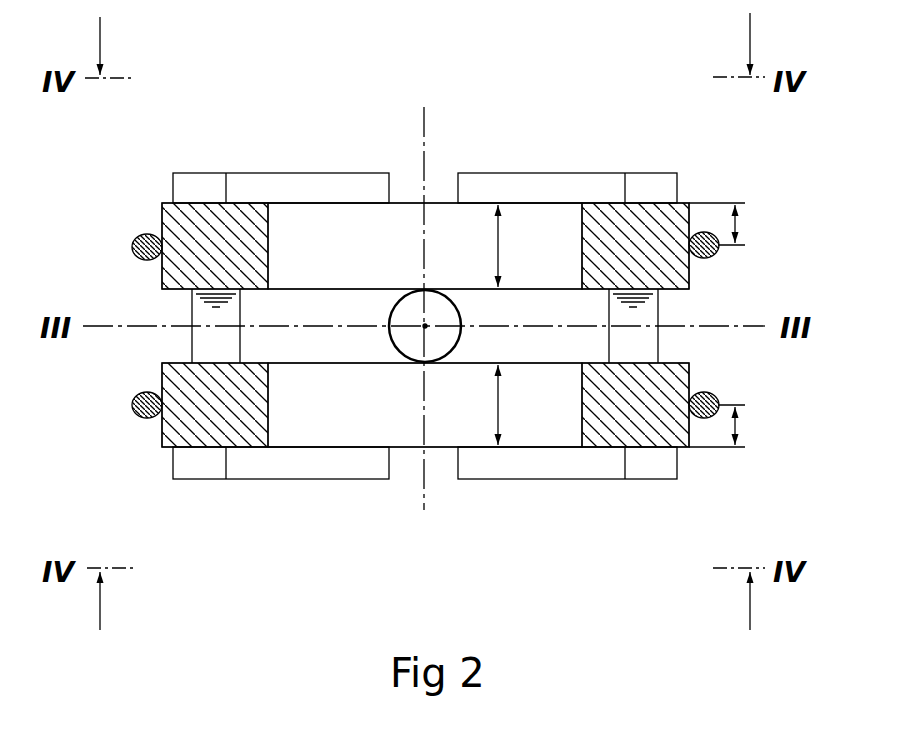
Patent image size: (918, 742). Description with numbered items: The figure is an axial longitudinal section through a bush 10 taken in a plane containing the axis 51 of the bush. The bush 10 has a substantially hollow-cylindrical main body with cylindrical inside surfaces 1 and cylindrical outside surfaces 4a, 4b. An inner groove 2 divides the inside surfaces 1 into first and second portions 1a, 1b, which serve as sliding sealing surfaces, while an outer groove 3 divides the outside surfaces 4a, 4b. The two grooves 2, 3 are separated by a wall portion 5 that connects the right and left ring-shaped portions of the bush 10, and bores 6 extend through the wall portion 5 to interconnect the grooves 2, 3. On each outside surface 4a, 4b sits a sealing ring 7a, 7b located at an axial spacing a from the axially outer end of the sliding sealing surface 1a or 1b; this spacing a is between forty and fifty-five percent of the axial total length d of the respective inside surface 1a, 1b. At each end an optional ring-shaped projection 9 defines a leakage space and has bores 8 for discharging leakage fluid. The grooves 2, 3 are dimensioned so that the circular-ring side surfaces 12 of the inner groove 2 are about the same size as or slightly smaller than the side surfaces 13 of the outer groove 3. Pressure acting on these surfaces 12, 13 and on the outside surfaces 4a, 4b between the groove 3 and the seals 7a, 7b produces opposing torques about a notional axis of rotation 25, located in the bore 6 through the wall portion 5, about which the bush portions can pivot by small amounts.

The cylindrical inside surfaces 1 is at (336, 254).
The first portion of the cylindrical inside surfaces 1a is at (272, 238).
The second portion of the cylindrical inside surfaces 1b is at (272, 412).
The inner groove 2 is at (603, 348).
The outer groove 3 is at (672, 345).
The cylindrical outside surface 4a is at (158, 209).
The cylindrical outside surface 4b is at (156, 430).
The wall portion 5 is at (604, 313).
The bores 6 is at (205, 340).
The sealing ring 7a is at (712, 256).
The sealing ring 7b is at (712, 395).
The bores 8 is at (408, 188).
The ring-shaped projection 9 is at (578, 188).
The bush 10 is at (630, 146).
The side surfaces of the inner groove 12 is at (244, 359).
The side surfaces of the outer groove 13 is at (185, 292).
The axis of rotation 25 is at (420, 322).
The axis 51 is at (428, 115).
The axial spacing a is at (735, 222).
The axial total length d is at (485, 325).